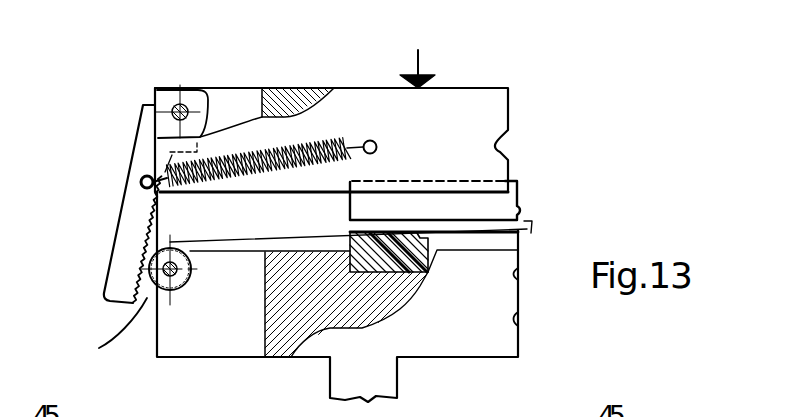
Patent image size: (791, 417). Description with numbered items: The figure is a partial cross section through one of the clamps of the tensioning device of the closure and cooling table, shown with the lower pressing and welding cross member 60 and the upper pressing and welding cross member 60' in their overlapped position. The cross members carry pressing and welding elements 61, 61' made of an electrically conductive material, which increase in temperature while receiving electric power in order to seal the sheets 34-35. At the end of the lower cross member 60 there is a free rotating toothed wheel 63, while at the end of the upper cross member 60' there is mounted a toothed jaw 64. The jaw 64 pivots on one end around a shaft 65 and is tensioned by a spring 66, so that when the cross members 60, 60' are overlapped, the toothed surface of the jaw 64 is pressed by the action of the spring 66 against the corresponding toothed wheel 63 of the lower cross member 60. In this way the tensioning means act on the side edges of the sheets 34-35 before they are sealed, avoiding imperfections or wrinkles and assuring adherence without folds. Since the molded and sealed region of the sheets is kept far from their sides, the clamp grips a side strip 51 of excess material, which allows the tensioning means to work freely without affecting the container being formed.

The lower pressing and welding cross member 60 is at (338, 298).
The upper pressing and welding cross member 60' is at (338, 102).
The pressing and welding element 61 is at (376, 289).
The pressing and welding element 61' is at (470, 189).
The free rotating toothed wheel 63 is at (187, 290).
The toothed jaw 64 is at (123, 248).
The shaft 65 is at (182, 110).
The spring 66 is at (294, 150).
The side strip of excess material 51 is at (120, 344).
The sheets 34-35 is at (288, 235).